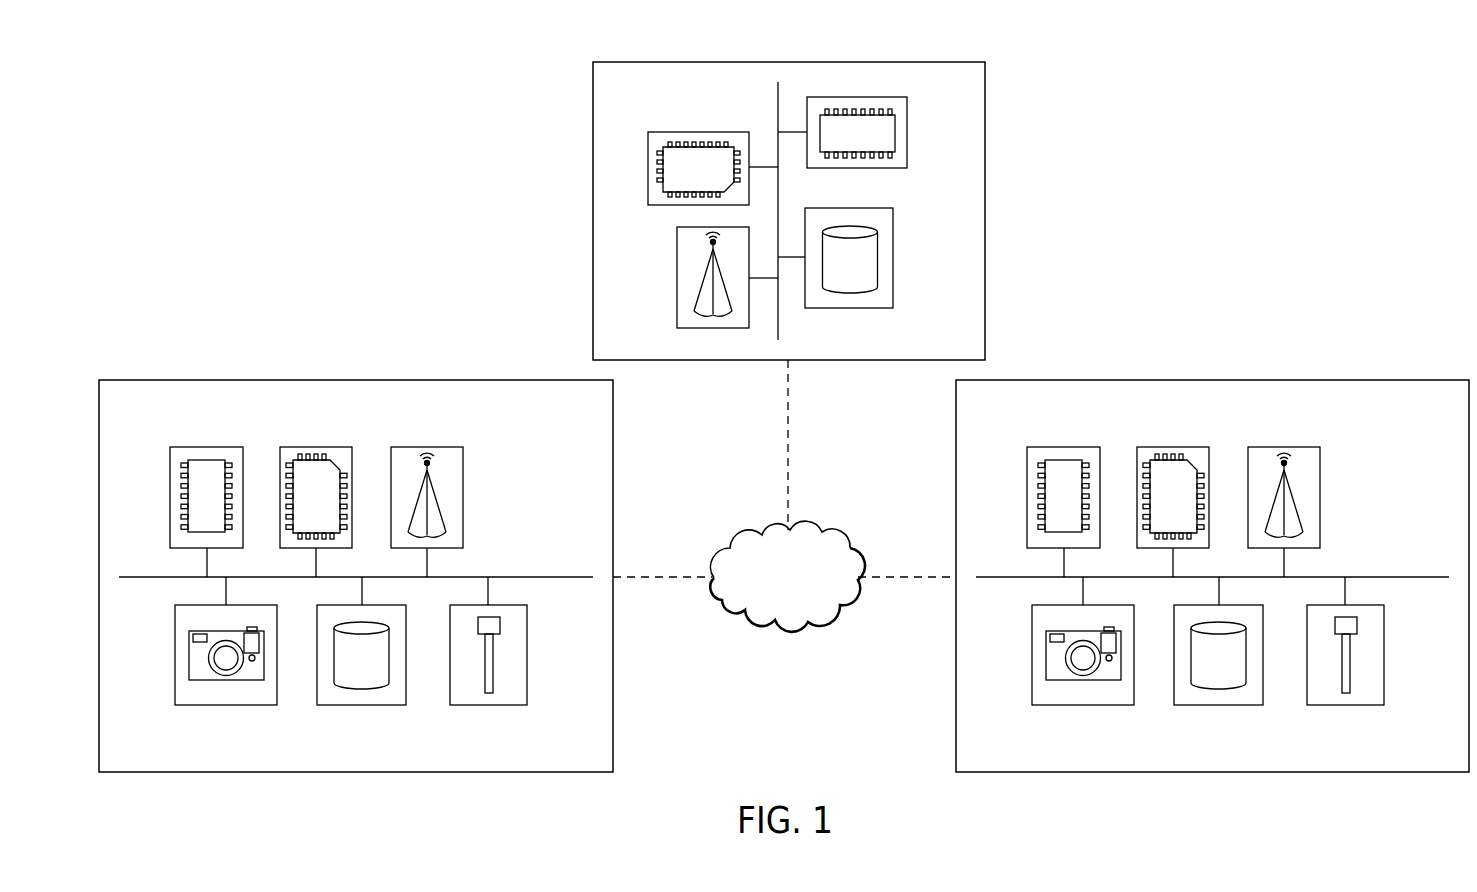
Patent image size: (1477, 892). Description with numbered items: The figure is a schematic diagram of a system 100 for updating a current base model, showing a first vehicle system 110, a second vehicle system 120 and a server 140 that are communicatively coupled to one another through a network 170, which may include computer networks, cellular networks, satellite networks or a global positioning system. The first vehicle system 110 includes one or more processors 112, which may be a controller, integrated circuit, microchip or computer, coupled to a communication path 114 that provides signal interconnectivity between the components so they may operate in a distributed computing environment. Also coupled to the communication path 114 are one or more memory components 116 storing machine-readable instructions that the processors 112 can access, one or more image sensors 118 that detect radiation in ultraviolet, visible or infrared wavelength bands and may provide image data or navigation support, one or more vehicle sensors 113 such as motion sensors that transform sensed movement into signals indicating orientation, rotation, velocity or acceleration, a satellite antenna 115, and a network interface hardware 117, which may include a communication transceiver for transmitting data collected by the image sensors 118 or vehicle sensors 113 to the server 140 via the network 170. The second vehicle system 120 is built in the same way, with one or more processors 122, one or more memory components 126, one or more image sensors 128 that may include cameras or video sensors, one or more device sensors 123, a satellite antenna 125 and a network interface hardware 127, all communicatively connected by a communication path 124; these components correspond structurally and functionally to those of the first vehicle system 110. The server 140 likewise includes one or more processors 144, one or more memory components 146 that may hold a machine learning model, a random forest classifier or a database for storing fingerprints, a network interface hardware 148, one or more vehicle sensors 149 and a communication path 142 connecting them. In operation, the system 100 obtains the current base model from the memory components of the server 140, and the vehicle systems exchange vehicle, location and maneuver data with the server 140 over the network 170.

The system 100 is at (1218, 127).
The first vehicle system 110 is at (160, 380).
The one or more processors 112 is at (318, 447).
The one or more vehicle sensors 113 is at (362, 705).
The communication path 114 is at (553, 577).
The satellite antenna 115 is at (488, 705).
The one or more memory components 116 is at (207, 447).
The network interface hardware 117 is at (427, 447).
The one or more image sensors 118 is at (227, 705).
The second vehicle system 120 is at (1372, 380).
The one or more processors 122 is at (1173, 447).
The one or more device sensors 123 is at (1219, 705).
The communication path 124 is at (1410, 577).
The satellite antenna 125 is at (1345, 705).
The one or more memory components 126 is at (1064, 447).
The network interface hardware 127 is at (1284, 447).
The one or more image sensors 128 is at (1083, 705).
The server 140 is at (985, 93).
The communication path 142 is at (778, 200).
The one or more processors 144 is at (907, 133).
The one or more memory components 146 is at (698, 132).
The network interface hardware 148 is at (677, 278).
The one or more vehicle sensors 149 is at (893, 257).
The network 170 is at (853, 553).